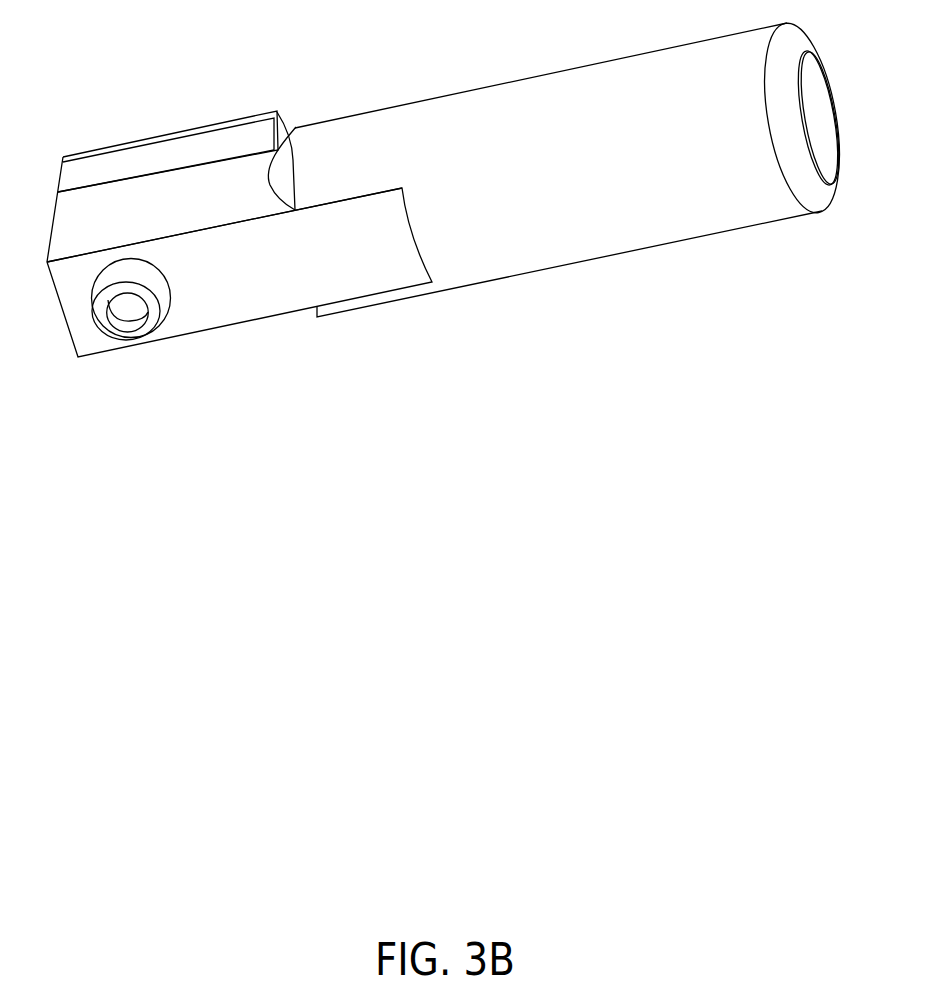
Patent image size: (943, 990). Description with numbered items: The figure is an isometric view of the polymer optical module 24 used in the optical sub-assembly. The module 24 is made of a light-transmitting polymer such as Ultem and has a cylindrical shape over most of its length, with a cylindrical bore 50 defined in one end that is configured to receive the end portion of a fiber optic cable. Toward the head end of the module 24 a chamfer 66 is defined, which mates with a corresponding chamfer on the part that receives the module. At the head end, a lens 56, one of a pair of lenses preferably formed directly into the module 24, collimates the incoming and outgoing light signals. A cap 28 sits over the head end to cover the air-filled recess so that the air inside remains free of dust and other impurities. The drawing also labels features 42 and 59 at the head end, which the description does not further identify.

The polymer optical module 24 is at (518, 297).
The cylindrical bore 50 is at (807, 113).
The cap 28 is at (187, 147).
The pocket 42 is at (97, 215).
The chamfer 66 is at (280, 183).
The counterbore 59 is at (100, 285).
The lens 56 is at (130, 312).